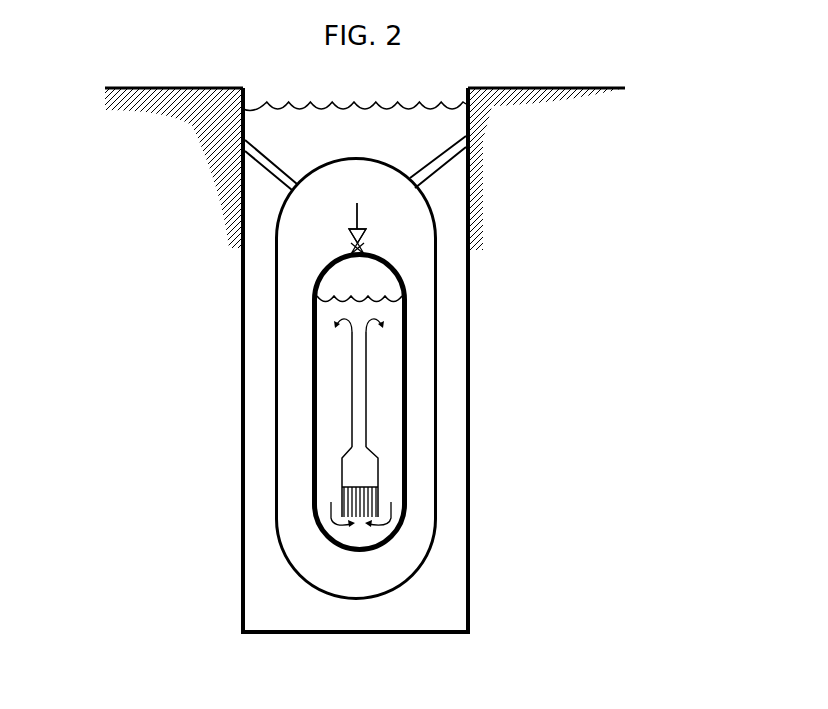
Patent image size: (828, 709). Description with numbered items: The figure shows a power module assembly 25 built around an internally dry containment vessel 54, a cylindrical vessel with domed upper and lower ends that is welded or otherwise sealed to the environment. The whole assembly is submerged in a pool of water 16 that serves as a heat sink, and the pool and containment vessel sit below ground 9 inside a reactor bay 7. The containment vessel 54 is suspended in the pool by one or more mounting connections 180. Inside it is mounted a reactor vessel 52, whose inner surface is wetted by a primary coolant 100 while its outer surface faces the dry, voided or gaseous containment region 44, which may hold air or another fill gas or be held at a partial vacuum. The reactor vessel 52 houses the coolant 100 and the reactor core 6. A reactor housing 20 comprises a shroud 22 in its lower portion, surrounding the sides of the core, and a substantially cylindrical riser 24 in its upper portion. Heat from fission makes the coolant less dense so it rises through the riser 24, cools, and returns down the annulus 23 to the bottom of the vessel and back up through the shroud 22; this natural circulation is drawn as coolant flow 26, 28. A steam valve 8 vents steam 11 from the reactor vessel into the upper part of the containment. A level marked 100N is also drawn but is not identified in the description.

The reactor core 6 is at (383, 495).
The reactor bay 7 is at (240, 550).
The steam valve 8 is at (480, 157).
The ground 9 is at (620, 92).
The steam 11 is at (345, 272).
The pool of water 16 is at (294, 142).
The reactor housing 20 is at (332, 433).
The shroud 22 is at (387, 470).
The annulus 23 is at (377, 442).
The riser 24 is at (378, 338).
The power module assembly 25 is at (263, 242).
The coolant flow 26 is at (333, 320).
The coolant flow 28 is at (404, 515).
The containment region 44 is at (318, 215).
The reactor vessel 52 is at (410, 275).
The containment vessel 54 is at (442, 245).
The primary coolant 100 is at (332, 370).
The coolant level 100N is at (403, 288).
The mounting connections 180 is at (433, 145).